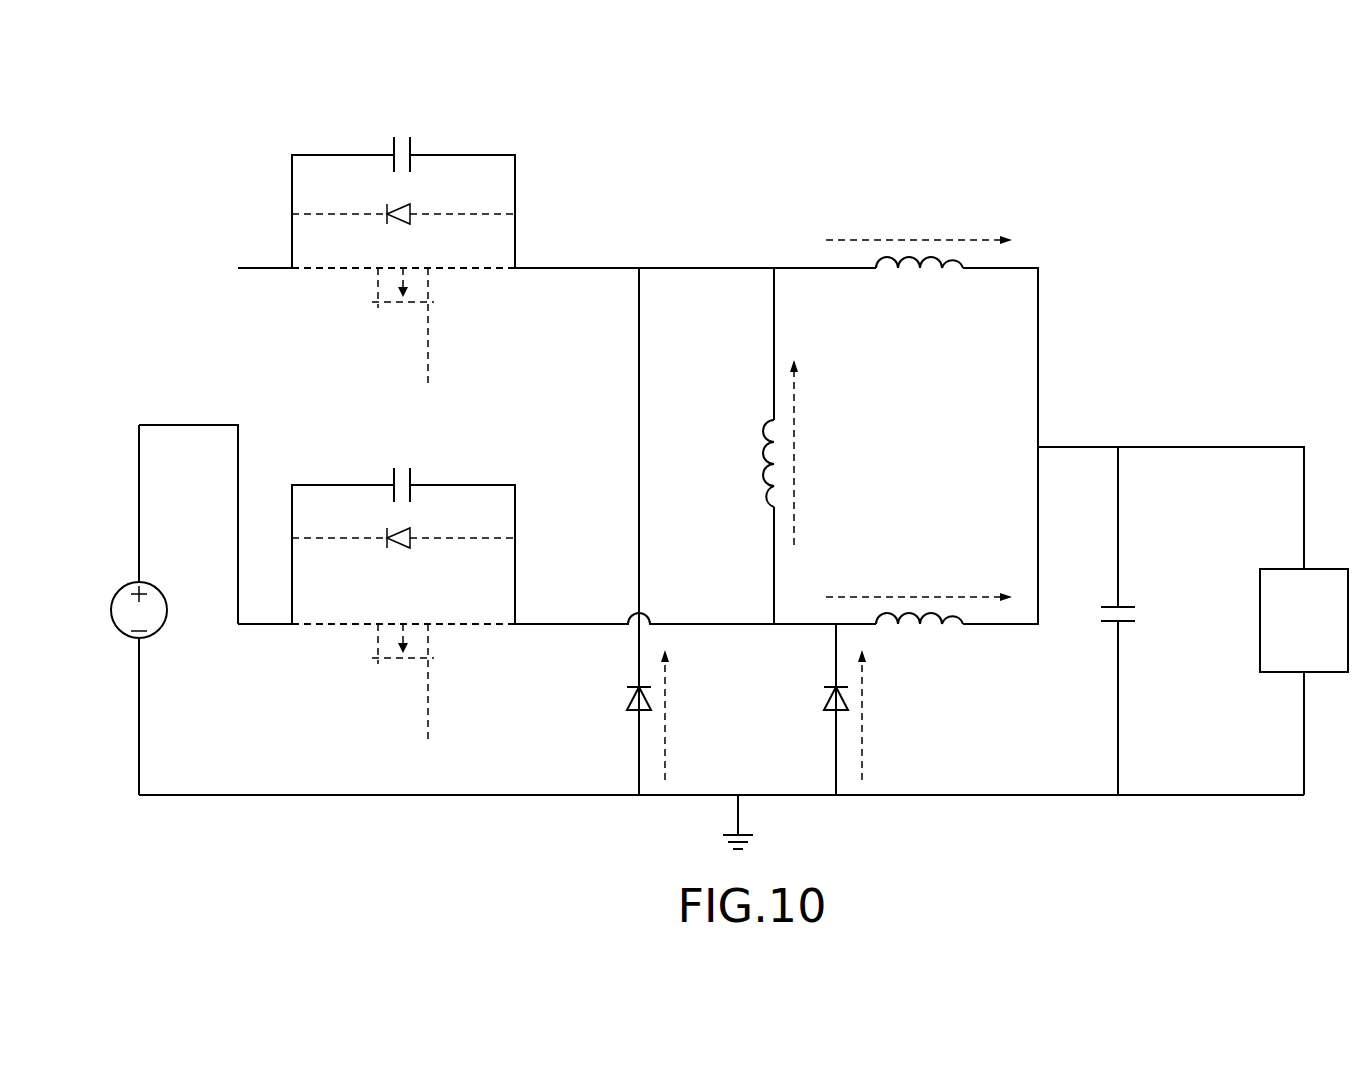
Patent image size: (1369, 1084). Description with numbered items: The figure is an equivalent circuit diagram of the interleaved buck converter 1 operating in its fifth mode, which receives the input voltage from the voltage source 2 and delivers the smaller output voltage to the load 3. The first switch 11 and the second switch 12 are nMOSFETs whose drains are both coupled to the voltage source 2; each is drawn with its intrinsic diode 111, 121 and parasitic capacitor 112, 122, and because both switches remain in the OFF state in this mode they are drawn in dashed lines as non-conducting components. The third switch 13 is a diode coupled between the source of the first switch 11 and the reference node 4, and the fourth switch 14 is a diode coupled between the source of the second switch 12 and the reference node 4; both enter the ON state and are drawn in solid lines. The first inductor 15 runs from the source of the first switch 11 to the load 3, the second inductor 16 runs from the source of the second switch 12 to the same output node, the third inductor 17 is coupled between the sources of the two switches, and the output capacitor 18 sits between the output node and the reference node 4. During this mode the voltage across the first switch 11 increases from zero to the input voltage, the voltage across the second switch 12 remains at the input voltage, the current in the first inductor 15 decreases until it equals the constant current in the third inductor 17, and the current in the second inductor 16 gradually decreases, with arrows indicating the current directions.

The interleaved buck converter 1 is at (683, 232).
The voltage source 2 is at (110, 610).
The load 3 is at (1333, 569).
The reference node 4 is at (752, 835).
The first switch 11 is at (391, 307).
The second switch 12 is at (391, 663).
The third switch 13 is at (626, 697).
The fourth switch 14 is at (823, 697).
The first inductor 15 is at (930, 270).
The second inductor 16 is at (930, 626).
The third inductor 17 is at (763, 452).
The output capacitor 18 is at (1110, 622).
The intrinsic diode 111 is at (410, 222).
The parasitic capacitor 112 is at (410, 160).
The intrinsic diode 121 is at (410, 546).
The parasitic capacitor 122 is at (410, 490).